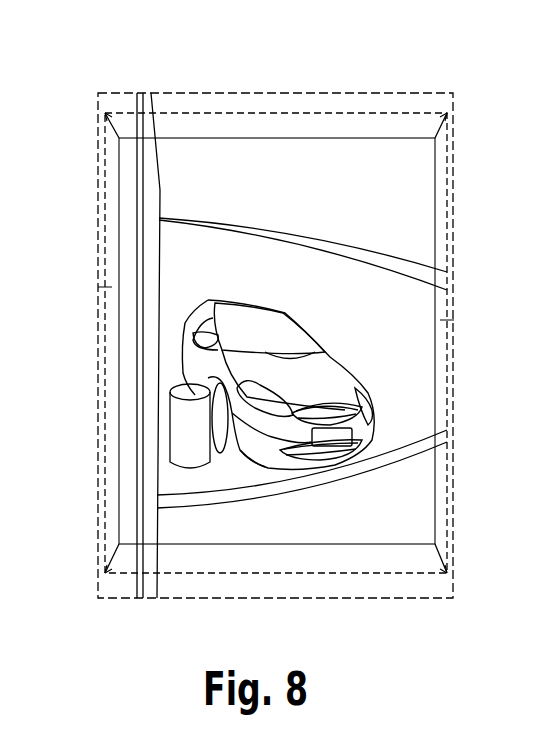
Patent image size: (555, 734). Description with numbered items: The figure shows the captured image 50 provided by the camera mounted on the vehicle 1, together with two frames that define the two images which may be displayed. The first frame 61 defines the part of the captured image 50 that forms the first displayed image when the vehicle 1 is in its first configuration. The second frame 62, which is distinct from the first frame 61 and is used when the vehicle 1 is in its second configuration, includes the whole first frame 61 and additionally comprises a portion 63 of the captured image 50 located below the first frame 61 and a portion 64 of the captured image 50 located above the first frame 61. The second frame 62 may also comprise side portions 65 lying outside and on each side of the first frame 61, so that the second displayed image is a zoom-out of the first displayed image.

The vehicle 1 is at (152, 126).
The captured image 50 is at (413, 102).
The first frame 61 is at (222, 137).
The second frame 62 is at (288, 112).
The portion of the captured image located below the first frame 63 is at (372, 560).
The portion of the captured image located above the first frame 64 is at (337, 128).
The side portions 65 is at (105, 287).